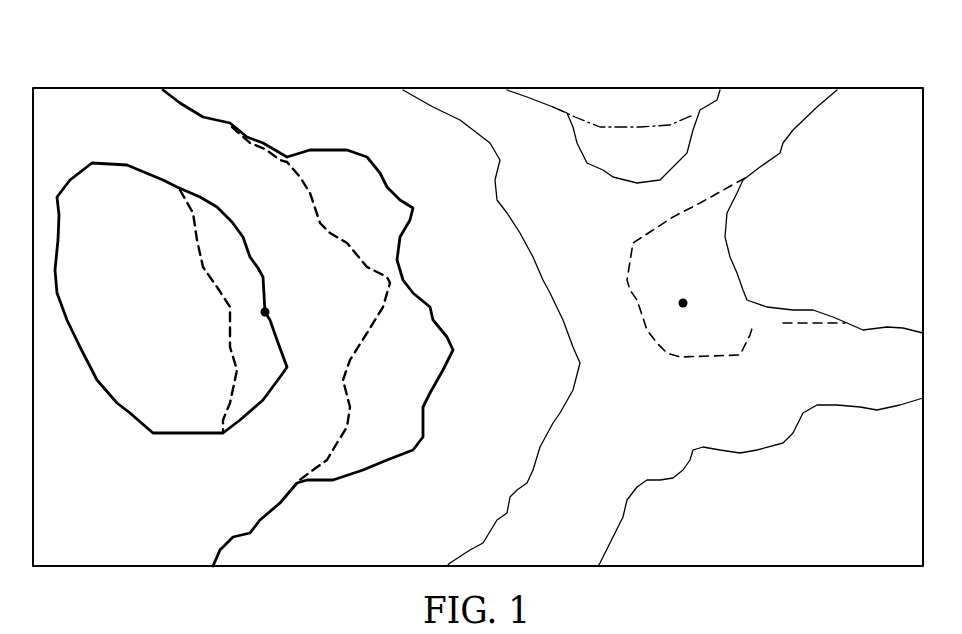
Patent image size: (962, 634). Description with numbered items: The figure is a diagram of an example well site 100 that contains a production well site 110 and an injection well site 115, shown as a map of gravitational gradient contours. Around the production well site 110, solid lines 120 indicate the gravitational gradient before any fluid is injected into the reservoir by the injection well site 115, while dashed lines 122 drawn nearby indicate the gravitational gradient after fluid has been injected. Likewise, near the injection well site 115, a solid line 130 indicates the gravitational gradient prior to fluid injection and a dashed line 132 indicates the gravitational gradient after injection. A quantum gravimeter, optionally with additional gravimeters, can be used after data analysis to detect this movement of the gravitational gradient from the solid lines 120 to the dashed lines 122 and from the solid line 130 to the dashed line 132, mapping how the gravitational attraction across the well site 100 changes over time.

The well site 100 is at (219, 61).
The production well site 110 is at (268, 310).
The injection well site 115 is at (683, 298).
The solid lines 120 is at (108, 163).
The dashed lines 122 is at (197, 250).
The solid line 130 is at (740, 275).
The dashed line 132 is at (633, 243).